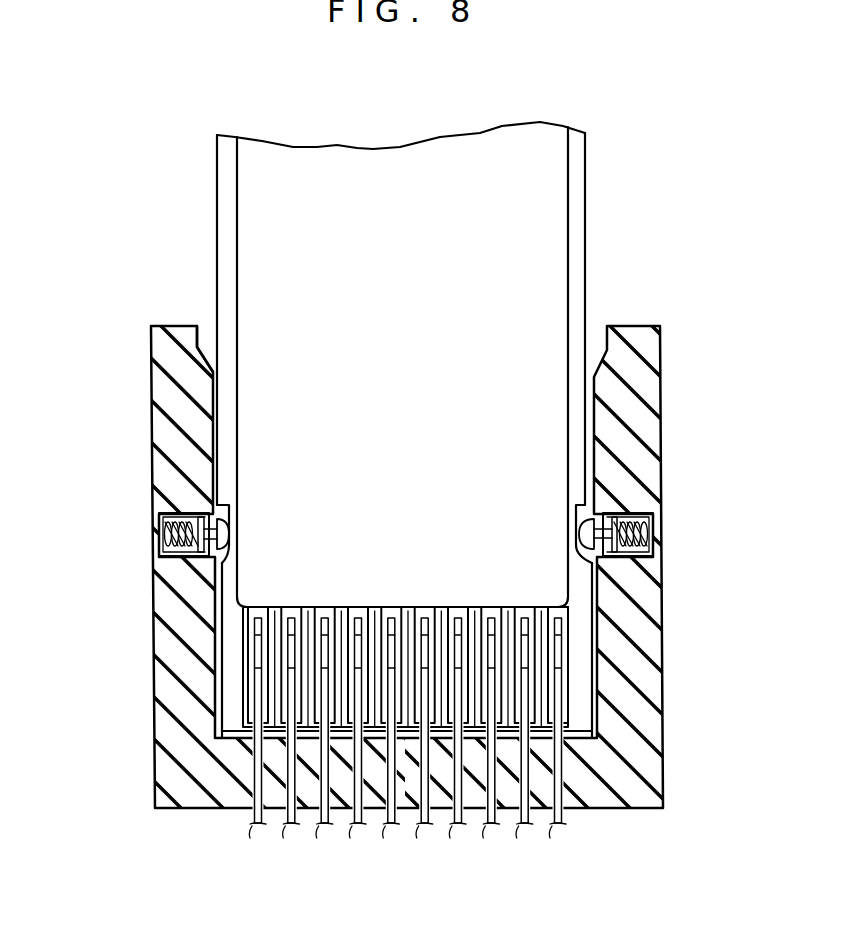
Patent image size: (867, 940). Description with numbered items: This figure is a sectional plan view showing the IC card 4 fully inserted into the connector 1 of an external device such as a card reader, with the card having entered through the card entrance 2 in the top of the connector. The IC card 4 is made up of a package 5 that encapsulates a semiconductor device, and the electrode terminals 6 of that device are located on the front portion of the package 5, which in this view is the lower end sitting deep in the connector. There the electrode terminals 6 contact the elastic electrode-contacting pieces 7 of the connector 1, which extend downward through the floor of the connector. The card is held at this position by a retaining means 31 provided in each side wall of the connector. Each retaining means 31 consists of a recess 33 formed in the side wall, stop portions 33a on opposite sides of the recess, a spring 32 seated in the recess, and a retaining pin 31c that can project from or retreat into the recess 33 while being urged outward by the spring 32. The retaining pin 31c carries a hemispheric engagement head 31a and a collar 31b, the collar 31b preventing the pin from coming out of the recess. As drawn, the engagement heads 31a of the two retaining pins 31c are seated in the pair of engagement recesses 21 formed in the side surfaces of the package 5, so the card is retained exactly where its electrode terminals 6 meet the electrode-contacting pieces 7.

The connector 1 is at (636, 324).
The card entrance 2 is at (206, 345).
The IC card 4 is at (566, 113).
The package 5 is at (498, 132).
The electrode terminals 6 is at (246, 697).
The electrode-contacting pieces 7 is at (258, 826).
The engagement recesses 21 is at (221, 556).
The retaining means 31 is at (184, 550).
The engagement head 31a is at (216, 522).
The collar 31b is at (198, 518).
The retaining pin 31c is at (160, 530).
The spring 32 is at (182, 538).
The recess 33 is at (652, 549).
The stop portions 33a is at (606, 513).